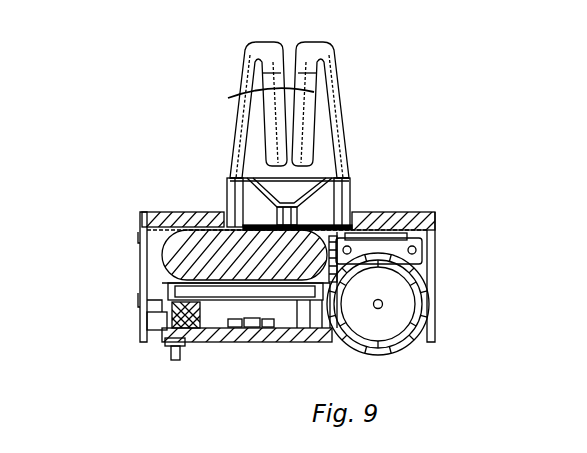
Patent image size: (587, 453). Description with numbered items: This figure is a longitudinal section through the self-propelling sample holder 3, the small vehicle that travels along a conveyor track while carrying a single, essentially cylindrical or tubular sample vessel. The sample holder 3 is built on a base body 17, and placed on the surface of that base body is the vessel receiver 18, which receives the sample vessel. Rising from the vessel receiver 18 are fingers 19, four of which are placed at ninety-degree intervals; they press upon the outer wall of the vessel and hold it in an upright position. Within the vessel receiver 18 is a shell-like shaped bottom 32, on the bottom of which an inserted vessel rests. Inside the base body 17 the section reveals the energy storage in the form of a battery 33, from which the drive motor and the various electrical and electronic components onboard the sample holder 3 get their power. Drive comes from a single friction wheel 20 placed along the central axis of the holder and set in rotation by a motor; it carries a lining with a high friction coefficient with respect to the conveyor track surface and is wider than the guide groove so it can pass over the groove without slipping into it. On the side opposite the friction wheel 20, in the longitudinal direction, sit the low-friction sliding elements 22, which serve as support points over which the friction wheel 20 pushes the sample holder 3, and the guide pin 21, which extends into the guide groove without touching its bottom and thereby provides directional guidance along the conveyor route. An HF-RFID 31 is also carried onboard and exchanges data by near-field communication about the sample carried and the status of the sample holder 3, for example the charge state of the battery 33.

The self-propelling sample holder 3 is at (112, 202).
The base body 17 is at (437, 223).
The vessel receiver 18 is at (367, 128).
The fingers 19 is at (248, 108).
The friction wheel 20 is at (388, 326).
The guide pin 21 is at (172, 362).
The sliding elements 22 is at (183, 347).
The HF-RFID 31 is at (254, 332).
The shell-like shaped bottom 32 is at (306, 203).
The battery 33 is at (183, 259).